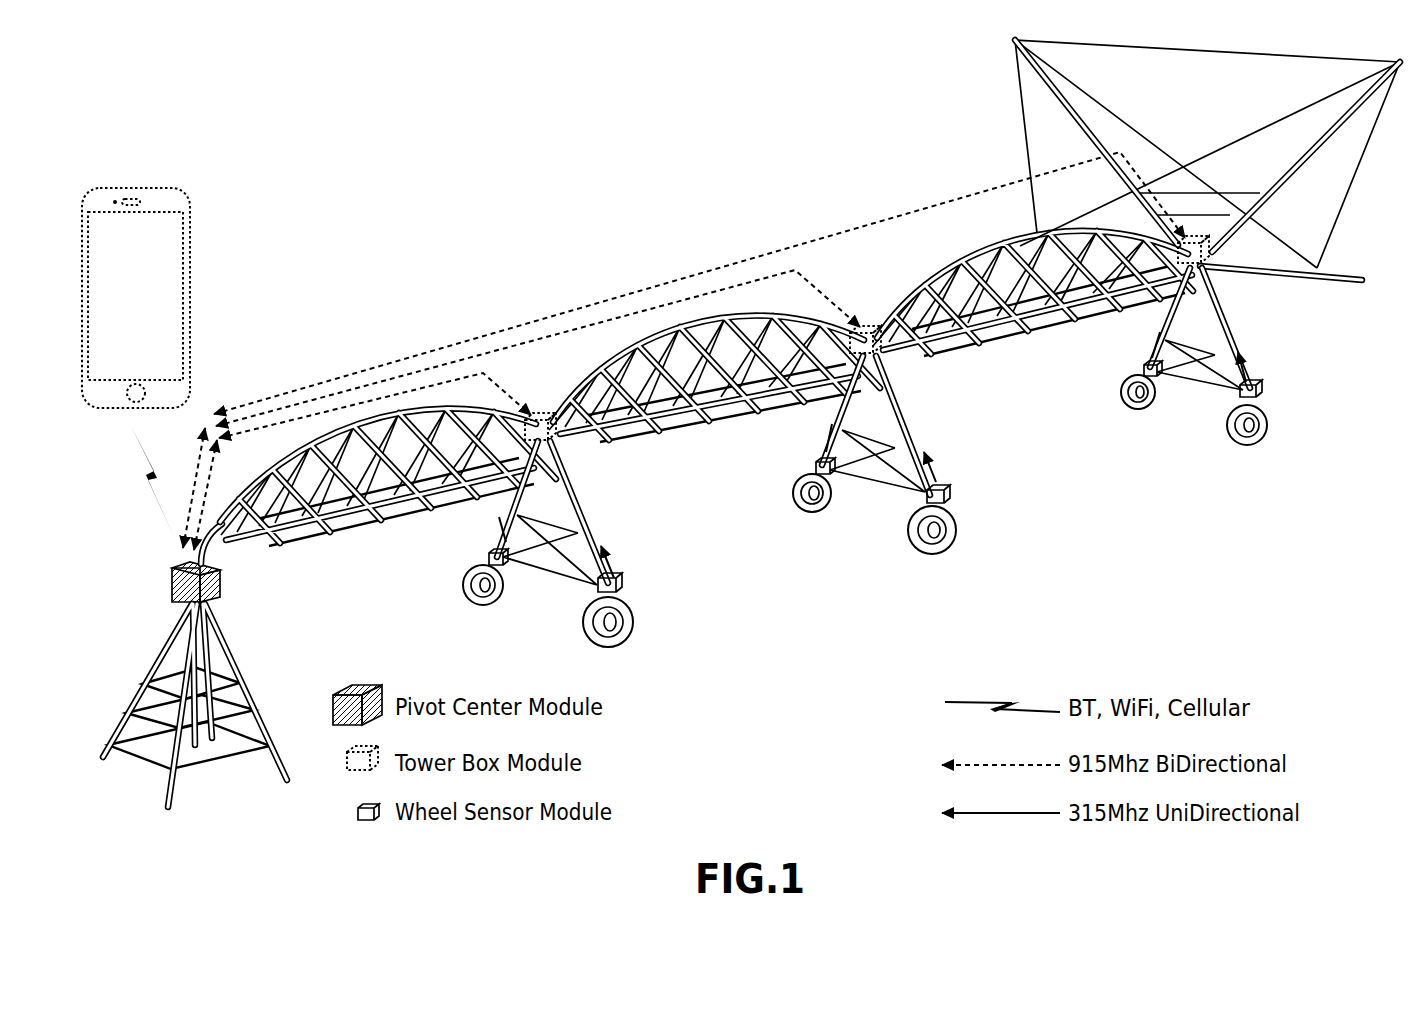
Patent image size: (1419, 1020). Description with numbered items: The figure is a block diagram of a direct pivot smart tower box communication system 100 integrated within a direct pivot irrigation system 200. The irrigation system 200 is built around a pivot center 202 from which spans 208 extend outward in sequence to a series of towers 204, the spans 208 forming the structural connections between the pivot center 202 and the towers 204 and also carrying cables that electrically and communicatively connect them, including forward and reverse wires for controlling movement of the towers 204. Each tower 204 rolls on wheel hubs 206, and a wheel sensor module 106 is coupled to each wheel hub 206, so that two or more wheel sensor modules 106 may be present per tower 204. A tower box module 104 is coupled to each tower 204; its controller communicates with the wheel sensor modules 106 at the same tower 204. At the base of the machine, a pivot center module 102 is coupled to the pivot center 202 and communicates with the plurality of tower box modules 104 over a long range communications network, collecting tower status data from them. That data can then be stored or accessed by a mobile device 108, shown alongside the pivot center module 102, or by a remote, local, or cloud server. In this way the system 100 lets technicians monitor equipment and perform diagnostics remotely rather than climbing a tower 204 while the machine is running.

The direct pivot smart tower box communication system 100 is at (118, 114).
The pivot center module 102 is at (222, 588).
The tower box module 104 is at (546, 412).
The wheel sensor module 106 is at (488, 560).
The mobile device 108 is at (190, 229).
The direct pivot irrigation system 200 is at (850, 594).
The pivot center 202 is at (233, 657).
The tower 204 is at (563, 486).
The wheel hub 206 is at (482, 605).
The span 208 is at (357, 427).